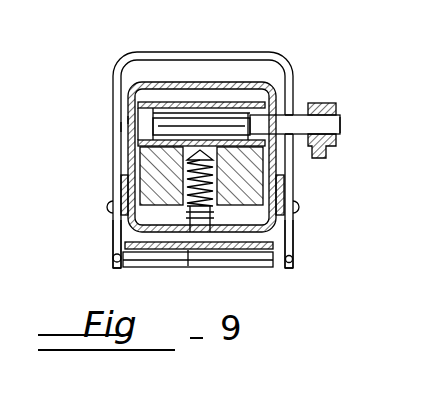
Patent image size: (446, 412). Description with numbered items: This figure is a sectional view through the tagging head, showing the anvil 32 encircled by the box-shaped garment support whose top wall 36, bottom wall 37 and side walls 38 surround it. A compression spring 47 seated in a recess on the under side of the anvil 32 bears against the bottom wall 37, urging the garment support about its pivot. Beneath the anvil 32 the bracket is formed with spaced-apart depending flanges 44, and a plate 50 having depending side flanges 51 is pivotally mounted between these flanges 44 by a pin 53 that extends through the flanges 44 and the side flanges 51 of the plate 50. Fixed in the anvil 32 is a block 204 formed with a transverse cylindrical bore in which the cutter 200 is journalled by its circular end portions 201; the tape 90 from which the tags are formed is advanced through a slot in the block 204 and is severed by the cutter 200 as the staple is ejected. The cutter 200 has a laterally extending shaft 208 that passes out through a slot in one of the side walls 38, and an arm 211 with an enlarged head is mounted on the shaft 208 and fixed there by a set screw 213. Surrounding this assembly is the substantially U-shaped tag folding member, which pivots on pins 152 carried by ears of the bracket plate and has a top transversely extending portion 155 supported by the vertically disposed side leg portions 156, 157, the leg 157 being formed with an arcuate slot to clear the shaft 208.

The top transversely extending portion 155 is at (202, 52).
The top wall 36 is at (213, 83).
The block 204 is at (149, 101).
The cutter 200 is at (170, 117).
The tape 90 is at (262, 110).
The circular end portions 201 is at (130, 120).
The side leg portion 157 is at (293, 115).
The set screw 213 is at (325, 107).
The shaft 208 is at (340, 125).
The arm 211 is at (326, 152).
The side leg portion 156 is at (120, 127).
The anvil 32 is at (135, 155).
The side walls 38 is at (128, 170).
The pins 152 is at (108, 207).
The compression spring 47 is at (185, 207).
The bottom wall 37 is at (250, 227).
The depending flanges 44 is at (113, 259).
The depending side flanges 51 is at (125, 268).
The plate 50 is at (190, 266).
The pin 53 is at (236, 268).